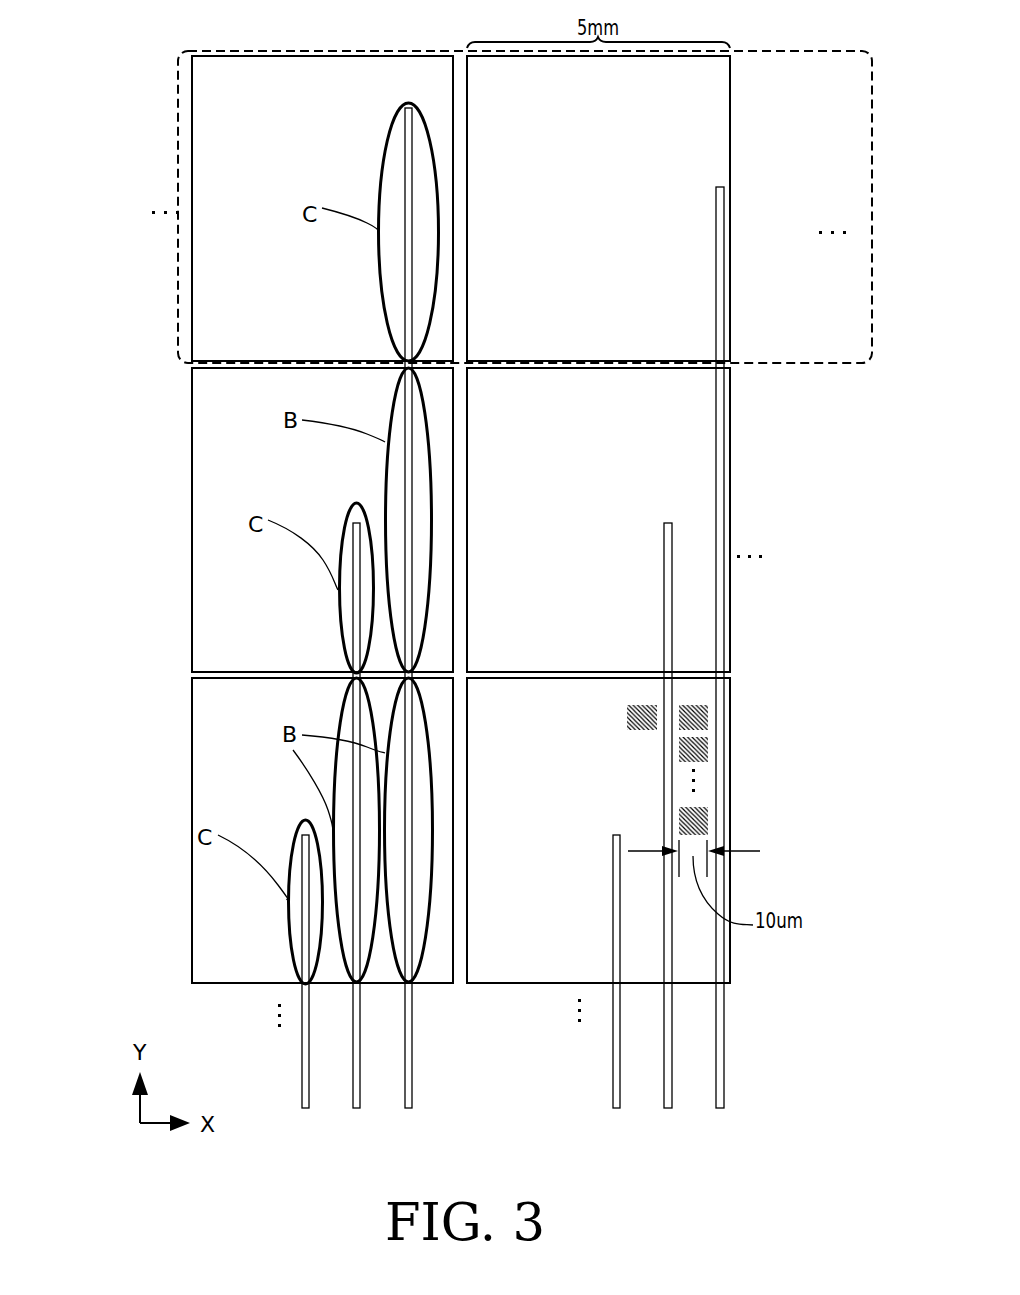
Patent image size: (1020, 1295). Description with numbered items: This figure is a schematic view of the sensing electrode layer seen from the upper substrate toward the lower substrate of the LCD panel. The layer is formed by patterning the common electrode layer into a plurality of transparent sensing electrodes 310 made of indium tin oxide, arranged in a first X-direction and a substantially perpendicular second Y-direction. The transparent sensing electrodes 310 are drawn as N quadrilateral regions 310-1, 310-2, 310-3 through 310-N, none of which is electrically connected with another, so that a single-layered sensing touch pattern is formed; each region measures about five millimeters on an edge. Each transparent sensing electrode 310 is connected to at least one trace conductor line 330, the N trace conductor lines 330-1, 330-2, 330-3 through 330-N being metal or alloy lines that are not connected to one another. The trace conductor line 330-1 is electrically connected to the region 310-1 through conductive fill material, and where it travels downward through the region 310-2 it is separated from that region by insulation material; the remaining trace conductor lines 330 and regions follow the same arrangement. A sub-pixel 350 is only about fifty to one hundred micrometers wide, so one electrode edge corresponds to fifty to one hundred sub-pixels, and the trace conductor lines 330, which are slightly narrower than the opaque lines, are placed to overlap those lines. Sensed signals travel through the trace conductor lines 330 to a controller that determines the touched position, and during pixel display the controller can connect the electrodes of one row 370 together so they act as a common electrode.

The transparent sensing electrode 310 is at (460, 519).
The first quadrilateral region 310-1 is at (192, 235).
The second quadrilateral region 310-2 is at (192, 523).
The third quadrilateral region 310-3 is at (192, 817).
The Nth quadrilateral region 310-N is at (732, 107).
The trace conductor line 330 is at (475, 608).
The first trace conductor line 330-1 is at (405, 303).
The second trace conductor line 330-2 is at (353, 638).
The third trace conductor line 330-3 is at (302, 920).
The Nth trace conductor line 330-N is at (725, 515).
The sub-pixel 350 is at (692, 808).
The row 370 is at (178, 130).